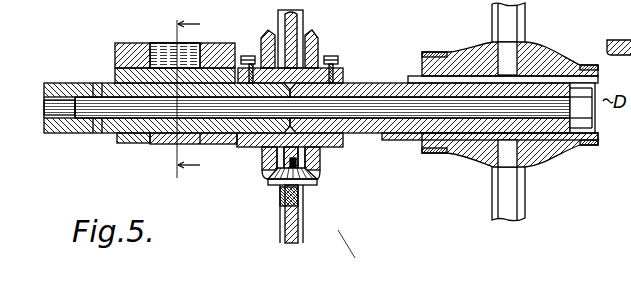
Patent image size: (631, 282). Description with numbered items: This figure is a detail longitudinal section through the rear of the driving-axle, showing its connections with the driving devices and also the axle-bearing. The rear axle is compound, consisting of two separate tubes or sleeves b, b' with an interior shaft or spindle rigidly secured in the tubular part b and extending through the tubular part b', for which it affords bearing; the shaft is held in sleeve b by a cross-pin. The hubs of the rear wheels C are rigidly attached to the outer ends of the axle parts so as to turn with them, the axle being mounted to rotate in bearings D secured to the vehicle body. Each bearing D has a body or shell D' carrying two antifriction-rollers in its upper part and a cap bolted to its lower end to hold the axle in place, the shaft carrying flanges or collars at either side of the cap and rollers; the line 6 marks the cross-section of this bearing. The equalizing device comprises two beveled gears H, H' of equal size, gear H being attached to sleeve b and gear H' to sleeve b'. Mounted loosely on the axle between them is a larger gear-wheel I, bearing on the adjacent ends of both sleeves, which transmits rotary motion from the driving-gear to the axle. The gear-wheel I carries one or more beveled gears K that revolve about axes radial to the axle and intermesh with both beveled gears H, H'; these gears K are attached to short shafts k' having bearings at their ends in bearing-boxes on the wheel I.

The tubular part of rear axle b is at (307, 128).
The tubular part of rear axle b' is at (322, 83).
The bearing D is at (175, 40).
The body or shell of bearing D' is at (169, 57).
The section line 6 6 is at (186, 98).
The beveled gear H is at (286, 98).
The beveled gear H' is at (290, 156).
The beveled gear K is at (317, 186).
The short shaft k' is at (267, 210).
The gear-wheel I is at (299, 233).
The rear wheel C is at (552, 57).